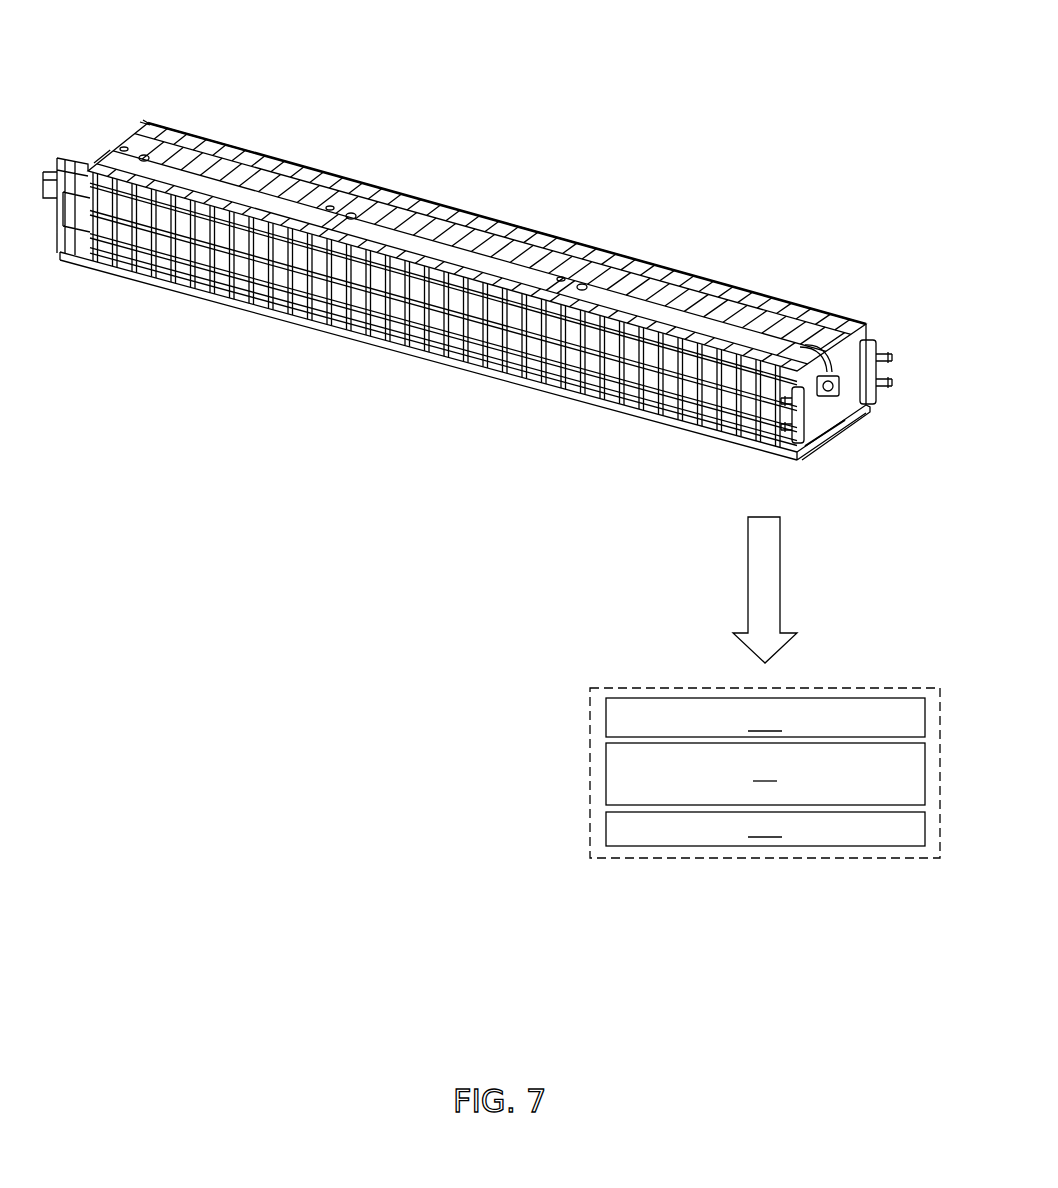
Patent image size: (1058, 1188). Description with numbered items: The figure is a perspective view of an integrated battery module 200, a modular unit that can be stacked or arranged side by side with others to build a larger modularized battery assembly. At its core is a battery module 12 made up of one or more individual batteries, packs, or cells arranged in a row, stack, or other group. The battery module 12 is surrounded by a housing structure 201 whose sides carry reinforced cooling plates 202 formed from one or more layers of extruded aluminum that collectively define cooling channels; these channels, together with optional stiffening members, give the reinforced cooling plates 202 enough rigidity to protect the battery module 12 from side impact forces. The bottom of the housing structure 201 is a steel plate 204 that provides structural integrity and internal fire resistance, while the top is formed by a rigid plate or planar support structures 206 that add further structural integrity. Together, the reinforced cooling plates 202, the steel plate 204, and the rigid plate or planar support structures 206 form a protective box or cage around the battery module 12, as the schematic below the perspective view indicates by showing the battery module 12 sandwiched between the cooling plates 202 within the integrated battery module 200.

The integrated battery module 200 is at (503, 440).
The housing structure 201 is at (467, 290).
The reinforced cooling plates 202 is at (440, 325).
The steel plate 204 is at (322, 330).
The rigid plate or planar support structures 206 is at (318, 182).
The battery module 12 is at (835, 388).